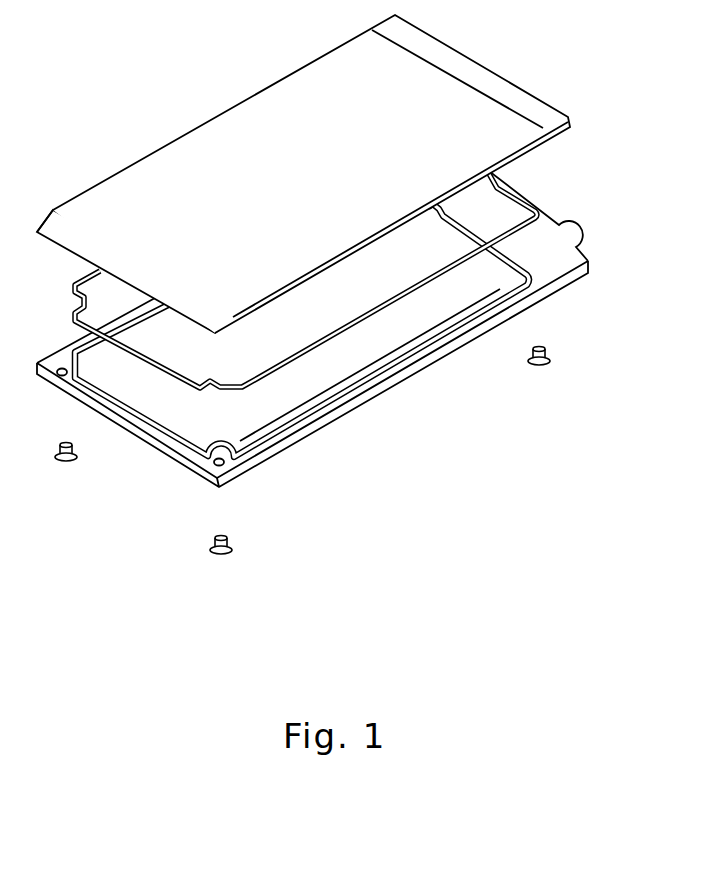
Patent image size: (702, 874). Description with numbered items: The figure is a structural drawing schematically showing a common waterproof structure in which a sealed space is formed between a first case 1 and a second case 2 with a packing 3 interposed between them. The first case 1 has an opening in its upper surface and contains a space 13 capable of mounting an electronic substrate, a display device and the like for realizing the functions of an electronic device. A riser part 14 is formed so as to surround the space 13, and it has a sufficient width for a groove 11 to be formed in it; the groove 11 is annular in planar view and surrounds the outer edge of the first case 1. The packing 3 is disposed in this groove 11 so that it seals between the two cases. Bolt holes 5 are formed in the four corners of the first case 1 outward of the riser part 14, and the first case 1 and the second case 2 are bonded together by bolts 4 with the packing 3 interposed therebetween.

The first case 1 is at (312, 354).
The second case 2 is at (487, 58).
The packing 3 is at (325, 342).
The bolts 4 is at (216, 560).
The bolt holes 5 is at (212, 465).
The groove 11 is at (293, 425).
The space 13 is at (420, 334).
The riser part 14 is at (517, 310).